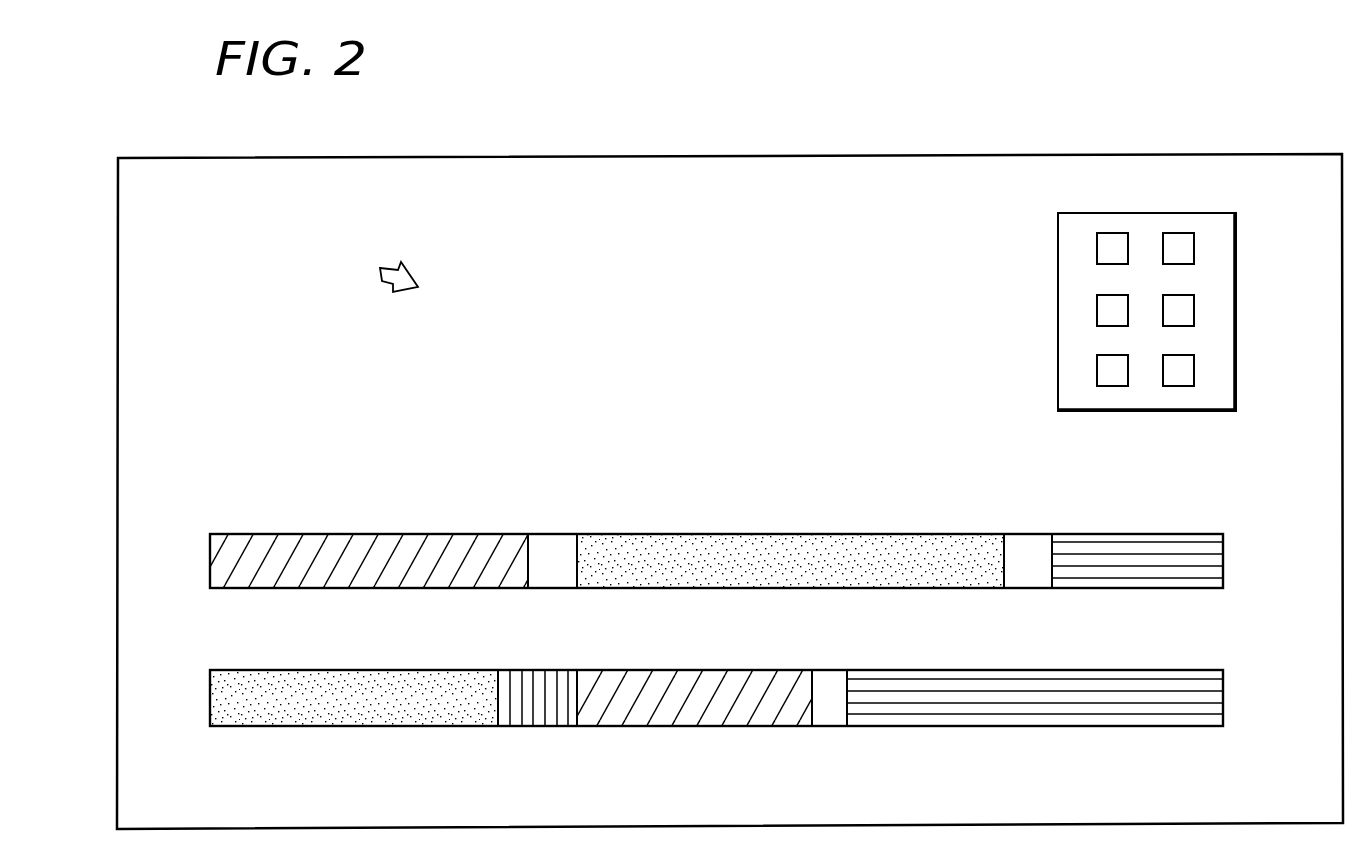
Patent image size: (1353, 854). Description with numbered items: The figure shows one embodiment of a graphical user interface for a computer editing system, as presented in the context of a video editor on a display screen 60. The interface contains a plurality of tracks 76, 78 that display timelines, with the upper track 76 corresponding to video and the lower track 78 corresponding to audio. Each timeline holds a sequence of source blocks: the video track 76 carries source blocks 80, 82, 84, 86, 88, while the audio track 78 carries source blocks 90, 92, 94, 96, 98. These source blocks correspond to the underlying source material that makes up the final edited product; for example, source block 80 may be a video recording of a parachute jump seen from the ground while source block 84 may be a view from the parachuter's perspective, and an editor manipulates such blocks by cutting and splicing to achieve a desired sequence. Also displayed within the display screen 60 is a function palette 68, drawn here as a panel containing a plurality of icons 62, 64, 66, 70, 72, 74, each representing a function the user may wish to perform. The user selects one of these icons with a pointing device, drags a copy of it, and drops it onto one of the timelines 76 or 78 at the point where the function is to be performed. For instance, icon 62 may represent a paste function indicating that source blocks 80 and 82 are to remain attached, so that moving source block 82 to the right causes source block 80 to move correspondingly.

The display screen 60 is at (835, 156).
The icon 62 is at (1097, 252).
The icon 64 is at (1097, 313).
The icon 66 is at (1097, 376).
The function palette 68 is at (1196, 412).
The icon 70 is at (1194, 252).
The icon 72 is at (1194, 313).
The icon 74 is at (1194, 375).
The track 76 is at (210, 548).
The track 78 is at (210, 712).
The source block 80 is at (372, 532).
The source block 82 is at (550, 532).
The source block 84 is at (738, 532).
The source block 86 is at (1030, 532).
The source block 88 is at (1143, 532).
The source block 90 is at (368, 728).
The source block 92 is at (537, 728).
The source block 94 is at (697, 728).
The source block 96 is at (830, 728).
The source block 98 is at (1040, 728).